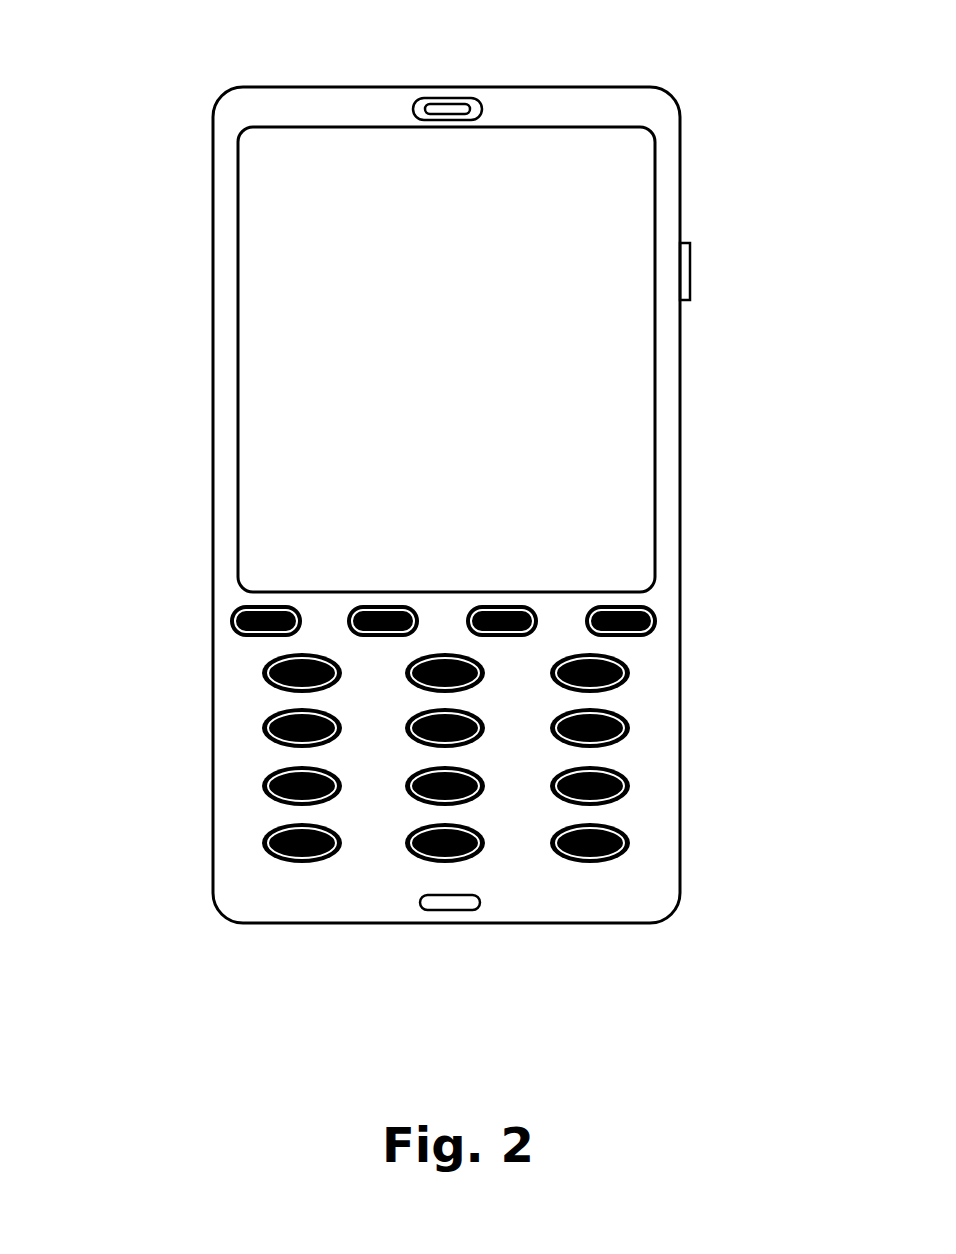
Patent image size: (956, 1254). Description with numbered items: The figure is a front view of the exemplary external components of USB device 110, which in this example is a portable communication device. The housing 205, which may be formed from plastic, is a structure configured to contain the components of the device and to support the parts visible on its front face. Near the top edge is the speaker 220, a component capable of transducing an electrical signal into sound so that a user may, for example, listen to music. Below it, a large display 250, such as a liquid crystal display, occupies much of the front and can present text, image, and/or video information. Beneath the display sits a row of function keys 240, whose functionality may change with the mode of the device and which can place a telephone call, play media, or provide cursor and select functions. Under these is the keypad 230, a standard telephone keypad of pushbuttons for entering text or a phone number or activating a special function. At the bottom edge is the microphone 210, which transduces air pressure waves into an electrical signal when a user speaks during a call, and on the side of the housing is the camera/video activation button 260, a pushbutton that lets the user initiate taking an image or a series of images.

The USB device 110 is at (222, 54).
The housing 205 is at (212, 440).
The microphone 210 is at (467, 910).
The speaker 220 is at (461, 97).
The keypad 230 is at (693, 860).
The function keys 240 is at (693, 600).
The display 250 is at (638, 377).
The camera/video activation button 260 is at (686, 268).